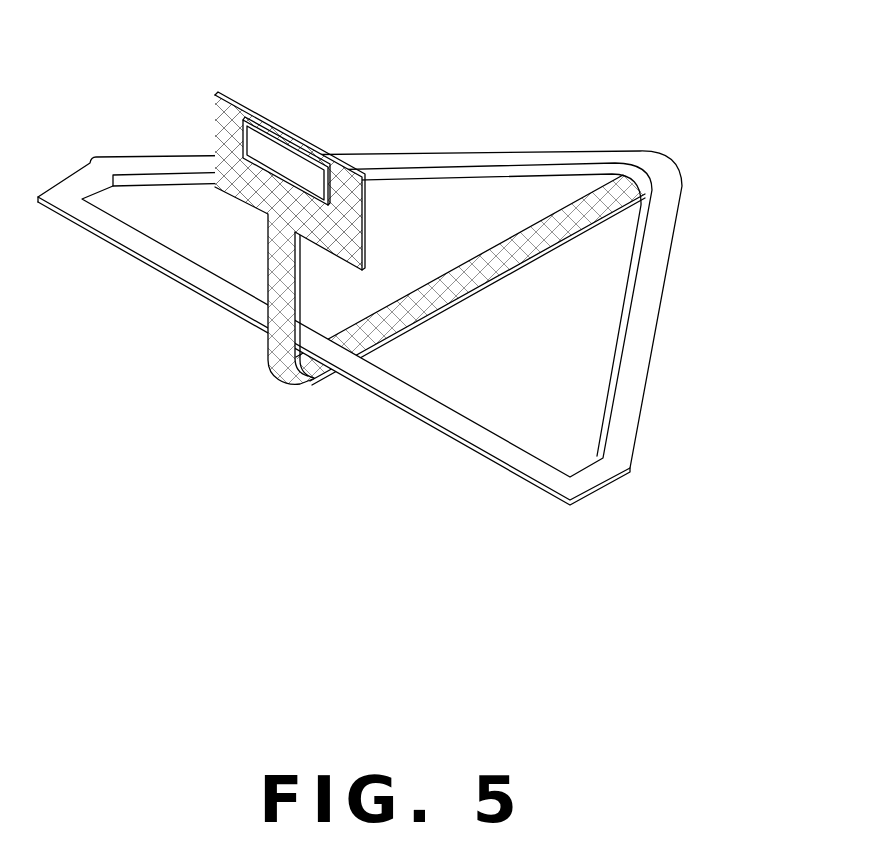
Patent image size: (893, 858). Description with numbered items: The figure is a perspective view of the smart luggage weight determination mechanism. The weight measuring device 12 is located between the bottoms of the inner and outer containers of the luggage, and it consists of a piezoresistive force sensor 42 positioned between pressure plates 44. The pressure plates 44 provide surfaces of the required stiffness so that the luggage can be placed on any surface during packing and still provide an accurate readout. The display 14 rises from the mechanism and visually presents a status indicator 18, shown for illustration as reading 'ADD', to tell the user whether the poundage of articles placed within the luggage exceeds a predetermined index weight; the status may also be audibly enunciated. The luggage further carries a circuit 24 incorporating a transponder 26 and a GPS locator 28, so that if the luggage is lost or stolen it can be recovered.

The weight measuring device 12 is at (412, 271).
The display 14 is at (227, 140).
The status indicator 18 is at (302, 158).
The circuit 24 is at (264, 337).
The transponder 26 is at (237, 163).
The GPS locator 28 is at (252, 143).
The piezoresistive force sensor 42 is at (497, 183).
The pressure plates 44 is at (541, 160).